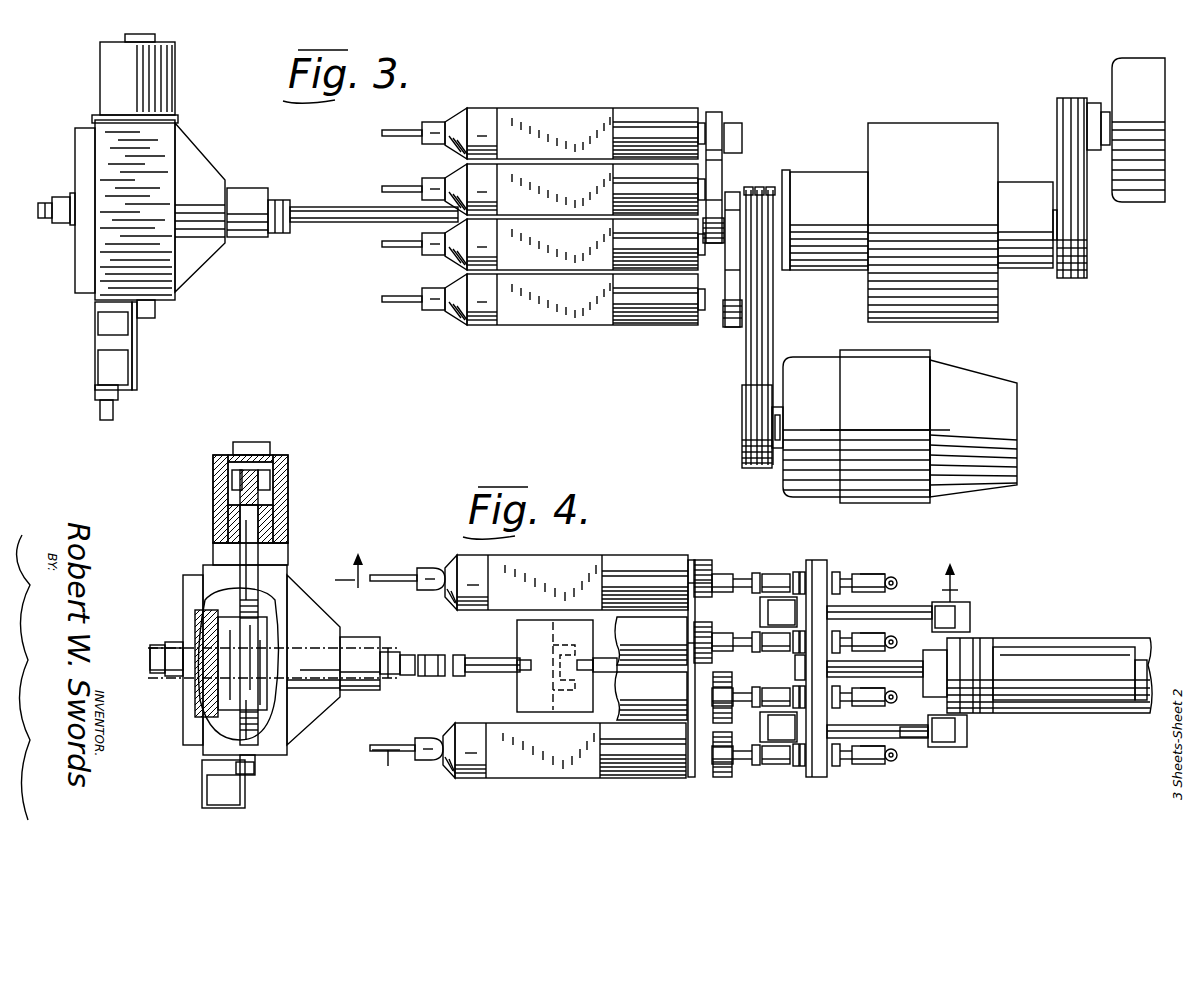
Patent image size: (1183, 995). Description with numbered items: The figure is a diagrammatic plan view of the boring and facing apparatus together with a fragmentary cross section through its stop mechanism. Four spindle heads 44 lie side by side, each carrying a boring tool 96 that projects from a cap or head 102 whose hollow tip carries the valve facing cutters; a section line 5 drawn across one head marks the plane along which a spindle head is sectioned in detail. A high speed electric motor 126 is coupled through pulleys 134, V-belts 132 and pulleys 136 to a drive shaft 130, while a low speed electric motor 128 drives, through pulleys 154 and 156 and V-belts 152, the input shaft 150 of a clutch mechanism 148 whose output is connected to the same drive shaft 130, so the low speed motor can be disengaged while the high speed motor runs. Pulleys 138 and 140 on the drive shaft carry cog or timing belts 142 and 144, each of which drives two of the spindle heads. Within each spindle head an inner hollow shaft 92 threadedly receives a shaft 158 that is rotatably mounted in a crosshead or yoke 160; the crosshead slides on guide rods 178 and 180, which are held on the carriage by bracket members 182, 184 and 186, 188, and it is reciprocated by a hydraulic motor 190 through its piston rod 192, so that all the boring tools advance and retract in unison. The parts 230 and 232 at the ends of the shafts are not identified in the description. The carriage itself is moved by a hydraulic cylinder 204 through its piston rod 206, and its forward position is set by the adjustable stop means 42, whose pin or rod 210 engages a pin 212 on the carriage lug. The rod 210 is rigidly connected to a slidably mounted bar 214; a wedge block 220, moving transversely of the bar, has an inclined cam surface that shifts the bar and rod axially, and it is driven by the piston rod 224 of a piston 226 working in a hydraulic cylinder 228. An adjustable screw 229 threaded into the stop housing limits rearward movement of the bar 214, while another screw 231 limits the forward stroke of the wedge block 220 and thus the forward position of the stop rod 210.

In FIG. 3, the adjustable stop means 42 is at (66, 158).
In FIG. 4, the adjustable stop means 42 is at (180, 596).
In FIG. 3, the hydraulic cylinder 228 is at (160, 72).
In FIG. 4, the hydraulic cylinder 228 is at (213, 484).
In FIG. 4, the piston 226 is at (284, 505).
In FIG. 4, the piston rod 224 is at (250, 556).
In FIG. 4, the adjustable screw 229 is at (162, 645).
In FIG. 4, the wedge block 220 is at (228, 718).
In FIG. 4, the screw 231 is at (243, 768).
In FIG. 3, the slidably mounted bar 214 is at (272, 240).
In FIG. 4, the slidably mounted bar 214 is at (383, 680).
In FIG. 3, the pin or rod 210 is at (333, 212).
In FIG. 4, the pin or rod 210 is at (462, 658).
In FIG. 4, the pin 212 is at (512, 672).
In FIG. 4, the piston rod 206 is at (600, 712).
In FIG. 3, the spindle head 44 is at (671, 220).
In FIG. 4, the spindle head 44 is at (643, 550).
In FIG. 3, the boring tool 96 is at (390, 245).
In FIG. 4, the boring tool 96 is at (383, 576).
In FIG. 3, the cap or head 102 is at (455, 248).
In FIG. 4, the cap or head 102 is at (453, 572).
In FIG. 3, the cog or timing belt 142 is at (722, 125).
In FIG. 4, the cog or timing belt 142 is at (710, 565).
In FIG. 3, the pulley 138 is at (703, 232).
In FIG. 3, the cog or timing belt 144 is at (731, 303).
In FIG. 3, the pulley 140 is at (744, 188).
In FIG. 3, the pulleys 136 is at (762, 190).
In FIG. 3, the V-belts 132 is at (755, 358).
In FIG. 3, the pulleys 134 is at (742, 458).
In FIG. 3, the drive shaft 130 is at (782, 213).
In FIG. 3, the clutch mechanism 148 is at (884, 118).
In FIG. 3, the input shaft 150 is at (1052, 223).
In FIG. 3, the V-belts 152 is at (1063, 160).
In FIG. 3, the pulley 154 is at (1078, 98).
In FIG. 3, the pulley 156 is at (1068, 278).
In FIG. 3, the low speed electric motor 128 is at (1128, 82).
In FIG. 3, the high speed electric motor 126 is at (1008, 423).
In FIG. 4, the section line 5- 5 is at (645, 659).
In FIG. 4, the hollow shaft 92 is at (742, 575).
In FIG. 4, the shaft 158 is at (778, 578).
In FIG. 4, the crosshead or yoke 160 is at (822, 562).
In FIG. 4, the bracket member 188 is at (770, 614).
In FIG. 4, the bracket member 184 is at (760, 728).
In FIG. 4, the plunger clutch 232 is at (880, 578).
In FIG. 4, the plunger rod 230 is at (897, 603).
In FIG. 4, the guide rod 180 is at (935, 665).
In FIG. 4, the piston rod 192 is at (960, 610).
In FIG. 4, the bracket member 186 is at (935, 655).
In FIG. 4, the hydraulic motor 190 is at (1060, 658).
In FIG. 4, the hydraulic cylinder 204 is at (1063, 712).
In FIG. 4, the bracket member 182 is at (967, 731).
In FIG. 4, the guide rod 178 is at (912, 740).